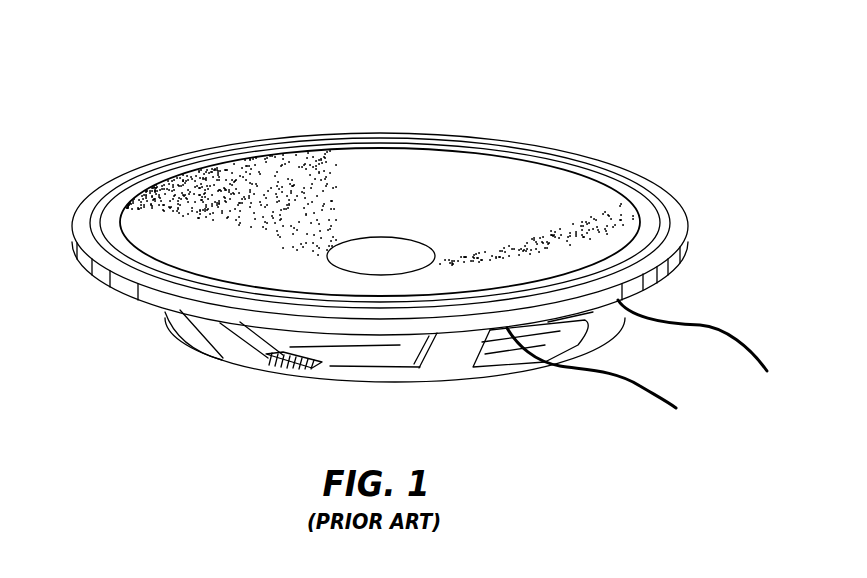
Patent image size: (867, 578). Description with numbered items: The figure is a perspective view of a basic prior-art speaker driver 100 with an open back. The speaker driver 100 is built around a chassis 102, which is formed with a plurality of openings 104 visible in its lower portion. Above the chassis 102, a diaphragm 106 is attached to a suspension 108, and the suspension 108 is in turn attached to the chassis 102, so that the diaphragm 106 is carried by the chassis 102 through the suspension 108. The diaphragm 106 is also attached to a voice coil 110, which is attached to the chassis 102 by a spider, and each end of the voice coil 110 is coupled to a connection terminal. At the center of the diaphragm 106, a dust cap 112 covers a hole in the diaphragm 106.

The speaker driver 100 is at (164, 98).
The chassis 102 is at (237, 350).
The openings 104 is at (367, 368).
The diaphragm 106 is at (528, 167).
The suspension 108 is at (113, 278).
The voice coil 110 is at (722, 330).
The dust cap 112 is at (400, 243).